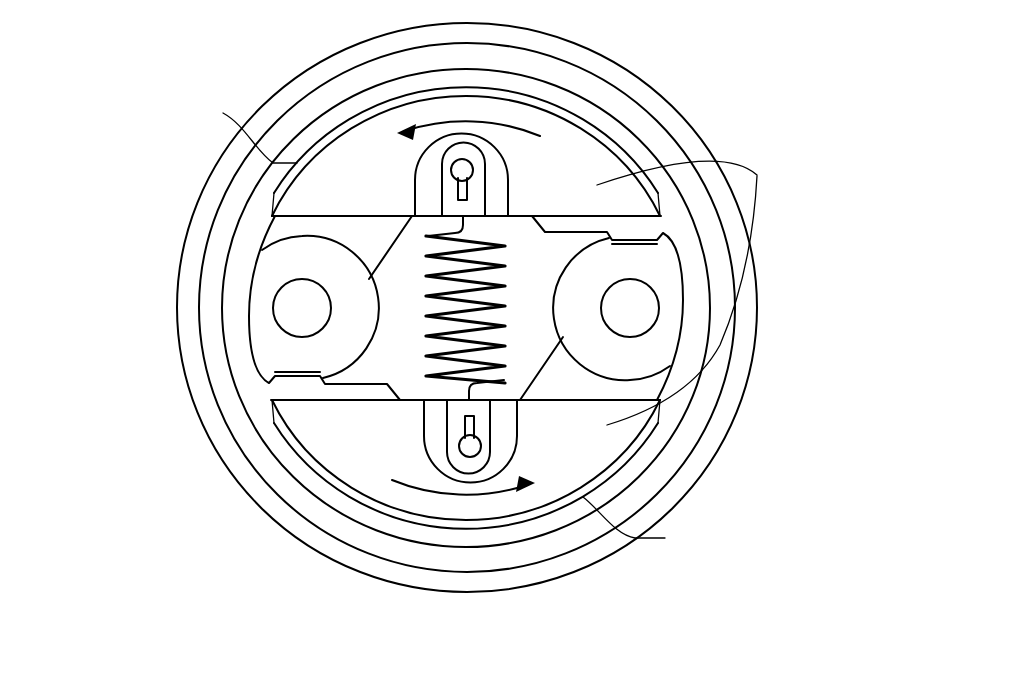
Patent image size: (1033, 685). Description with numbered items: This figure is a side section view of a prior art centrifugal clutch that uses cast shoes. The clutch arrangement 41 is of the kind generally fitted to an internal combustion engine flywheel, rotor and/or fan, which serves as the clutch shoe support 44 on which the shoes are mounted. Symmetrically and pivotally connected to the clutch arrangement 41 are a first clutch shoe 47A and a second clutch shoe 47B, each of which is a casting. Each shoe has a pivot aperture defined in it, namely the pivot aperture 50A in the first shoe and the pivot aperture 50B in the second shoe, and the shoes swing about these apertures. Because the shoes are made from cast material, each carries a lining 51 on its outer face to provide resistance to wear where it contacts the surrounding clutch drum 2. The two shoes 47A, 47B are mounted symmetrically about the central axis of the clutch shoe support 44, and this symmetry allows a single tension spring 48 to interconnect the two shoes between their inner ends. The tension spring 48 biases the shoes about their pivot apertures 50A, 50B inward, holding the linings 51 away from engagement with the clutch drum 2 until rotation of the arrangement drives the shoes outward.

The clutch arrangement 41 is at (153, 50).
The clutch drum 2 is at (697, 430).
The clutch shoe support 44 is at (213, 432).
The first clutch shoe 47A is at (357, 147).
The second clutch shoe 47B is at (563, 462).
The tension spring 48 is at (505, 262).
The pivot aperture 50A is at (293, 311).
The pivot aperture 50B is at (645, 308).
The lining 51 is at (560, 112).